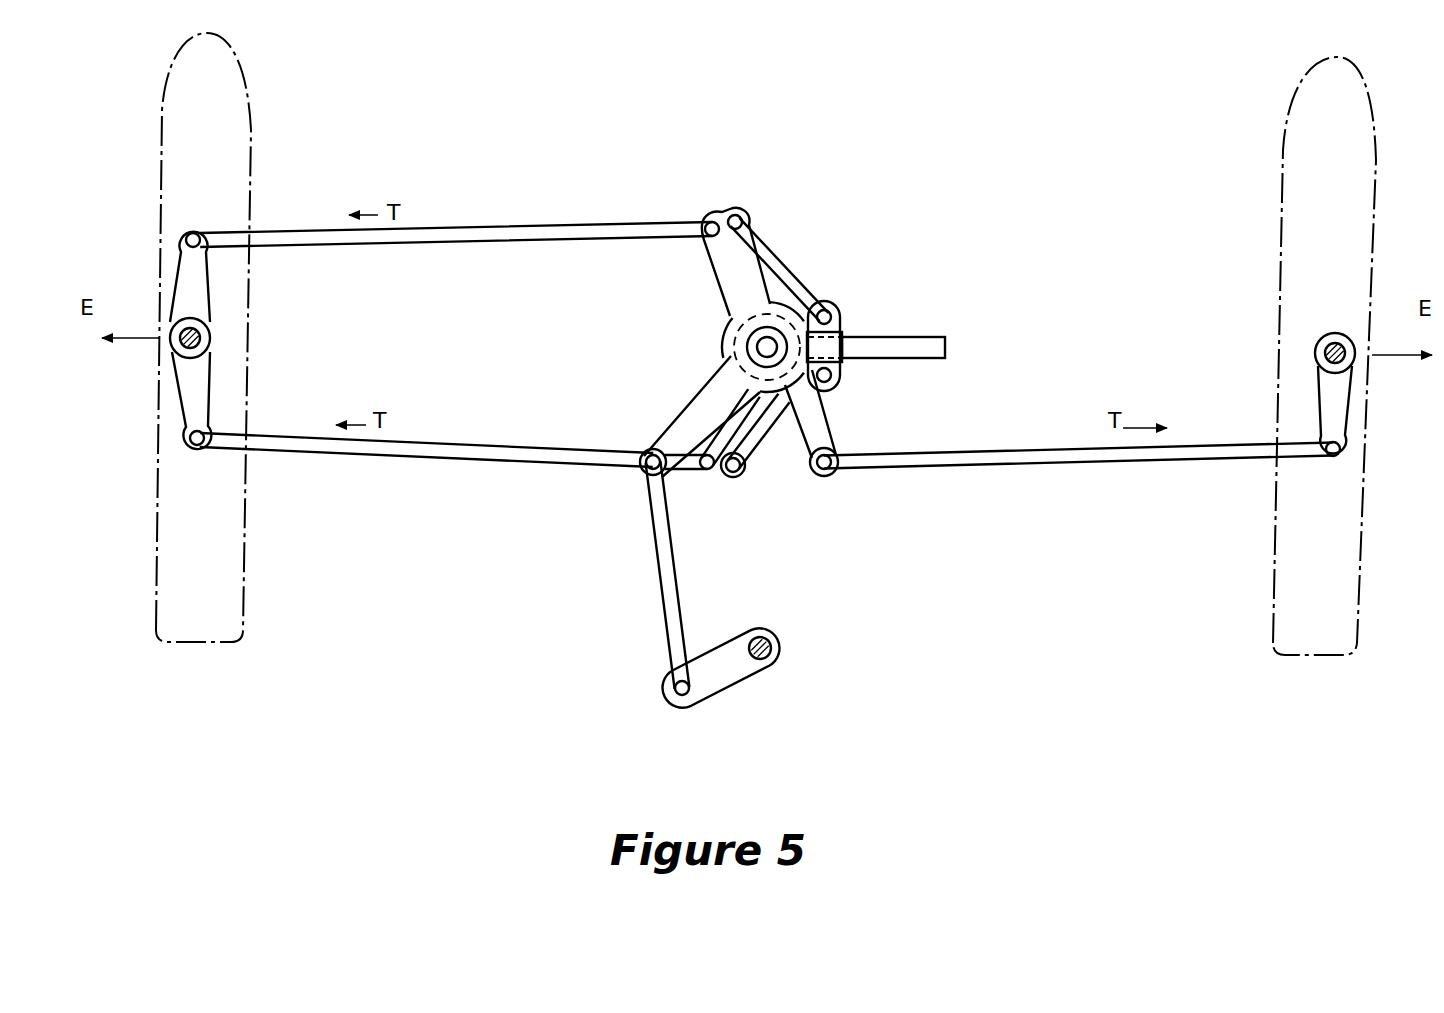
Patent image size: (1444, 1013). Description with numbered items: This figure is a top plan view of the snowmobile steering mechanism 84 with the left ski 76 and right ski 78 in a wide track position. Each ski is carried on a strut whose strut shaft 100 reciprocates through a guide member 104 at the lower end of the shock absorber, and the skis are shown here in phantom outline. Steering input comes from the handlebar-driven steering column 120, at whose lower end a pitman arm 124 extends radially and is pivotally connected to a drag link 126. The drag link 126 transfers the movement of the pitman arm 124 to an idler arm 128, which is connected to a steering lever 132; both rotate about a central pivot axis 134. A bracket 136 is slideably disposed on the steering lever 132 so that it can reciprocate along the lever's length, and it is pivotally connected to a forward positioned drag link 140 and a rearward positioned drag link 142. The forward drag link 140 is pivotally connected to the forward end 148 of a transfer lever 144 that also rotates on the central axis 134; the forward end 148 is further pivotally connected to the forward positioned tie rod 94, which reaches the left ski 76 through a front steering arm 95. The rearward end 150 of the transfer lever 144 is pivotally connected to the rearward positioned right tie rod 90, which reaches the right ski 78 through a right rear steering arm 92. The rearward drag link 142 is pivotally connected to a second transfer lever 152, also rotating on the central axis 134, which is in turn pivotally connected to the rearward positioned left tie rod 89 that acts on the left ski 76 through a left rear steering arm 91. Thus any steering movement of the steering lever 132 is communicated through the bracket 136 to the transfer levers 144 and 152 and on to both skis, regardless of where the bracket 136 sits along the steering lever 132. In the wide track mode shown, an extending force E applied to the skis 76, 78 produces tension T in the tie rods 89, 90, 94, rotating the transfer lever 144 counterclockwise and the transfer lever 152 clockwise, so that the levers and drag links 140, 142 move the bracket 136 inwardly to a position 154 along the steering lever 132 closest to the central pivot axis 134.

The left ski 76 is at (245, 602).
The right ski 78 is at (1270, 561).
The steering mechanism 84 is at (713, 159).
The left tie rod 89 is at (470, 443).
The right tie rod 90 is at (1067, 463).
The left rear steering arm 91 is at (205, 390).
The right rear steering arm 92 is at (1320, 393).
The forward positioned tie rod 94 is at (500, 227).
The front steering arm 95 is at (205, 280).
The strut shaft 100 is at (210, 338).
The guide member 104 is at (205, 322).
The steering column 120 is at (772, 645).
The pitman arm 124 is at (723, 690).
The drag link 126 is at (655, 530).
The idler arm 128 is at (673, 415).
The steering lever 132 is at (905, 358).
The central pivot axis 134 is at (832, 308).
The bracket 136 is at (843, 330).
The forward positioned drag link 140 is at (788, 263).
The rearward positioned drag link 142 is at (762, 452).
The transfer lever 144 is at (728, 314).
The forward end of transfer lever 148 is at (714, 278).
The rearward end of transfer lever 150 is at (827, 428).
The transfer lever 152 is at (728, 478).
The position 154 is at (849, 291).